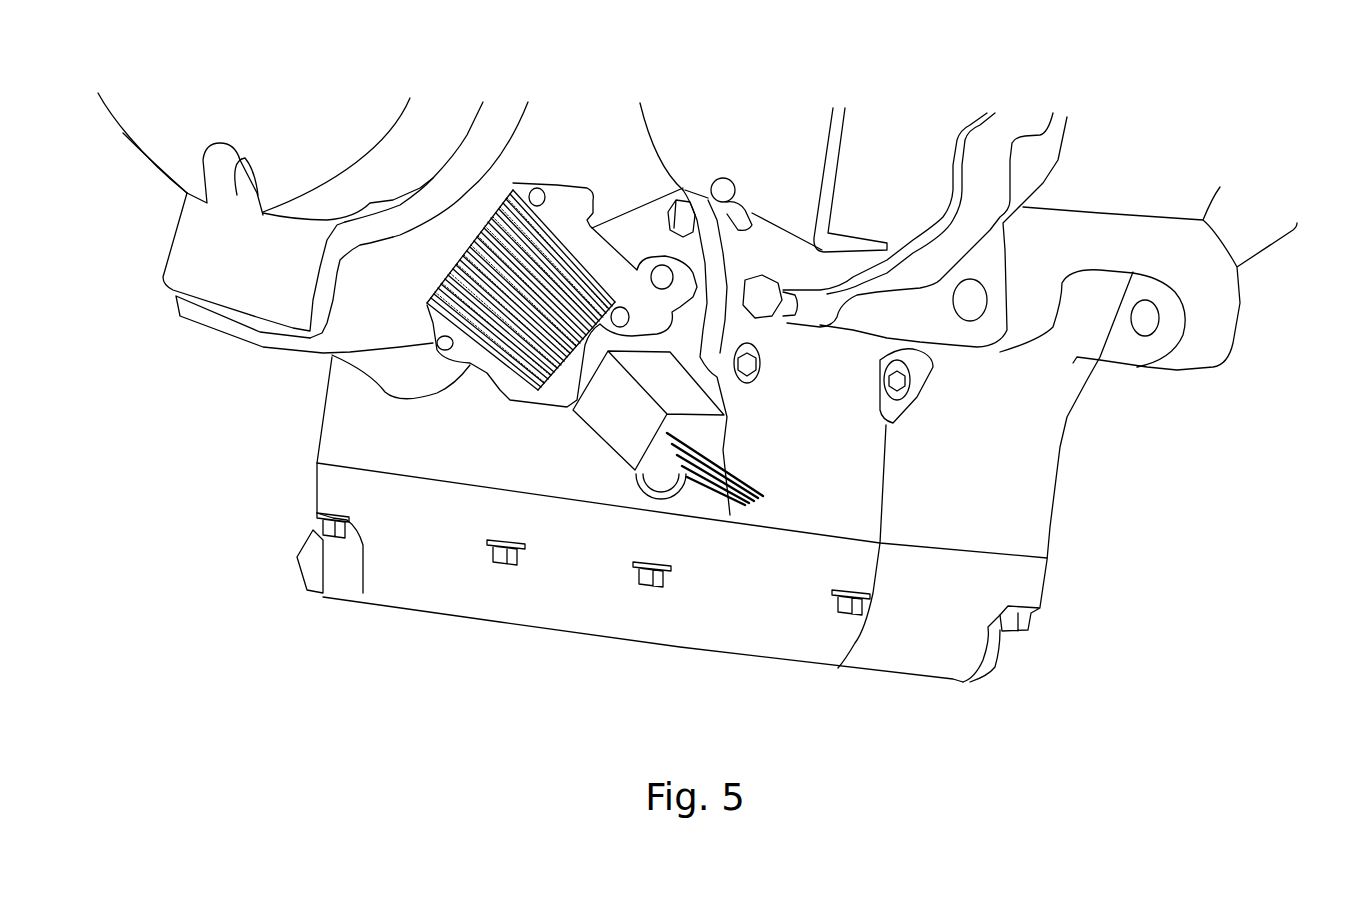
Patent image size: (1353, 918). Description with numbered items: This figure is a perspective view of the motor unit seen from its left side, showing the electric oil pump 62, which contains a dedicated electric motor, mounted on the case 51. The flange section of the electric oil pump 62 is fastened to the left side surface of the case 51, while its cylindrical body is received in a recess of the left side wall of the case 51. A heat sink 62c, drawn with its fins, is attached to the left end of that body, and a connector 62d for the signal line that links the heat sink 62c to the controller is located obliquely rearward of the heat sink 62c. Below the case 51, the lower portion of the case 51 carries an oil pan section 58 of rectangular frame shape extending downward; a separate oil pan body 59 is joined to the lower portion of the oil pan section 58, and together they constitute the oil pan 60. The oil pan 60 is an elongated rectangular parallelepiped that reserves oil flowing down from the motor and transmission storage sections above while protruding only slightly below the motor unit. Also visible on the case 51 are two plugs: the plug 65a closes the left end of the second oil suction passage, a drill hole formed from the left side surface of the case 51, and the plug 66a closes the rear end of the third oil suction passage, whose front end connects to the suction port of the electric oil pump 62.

The case 51 is at (263, 340).
The oil pan section 58 is at (983, 500).
The oil pan body 59 is at (978, 588).
The oil pan 60 is at (741, 477).
The electric oil pump 62 is at (507, 393).
The heat sink 62c is at (530, 400).
The connector 62d is at (620, 420).
The plug 65a is at (742, 386).
The plug 66a is at (907, 383).